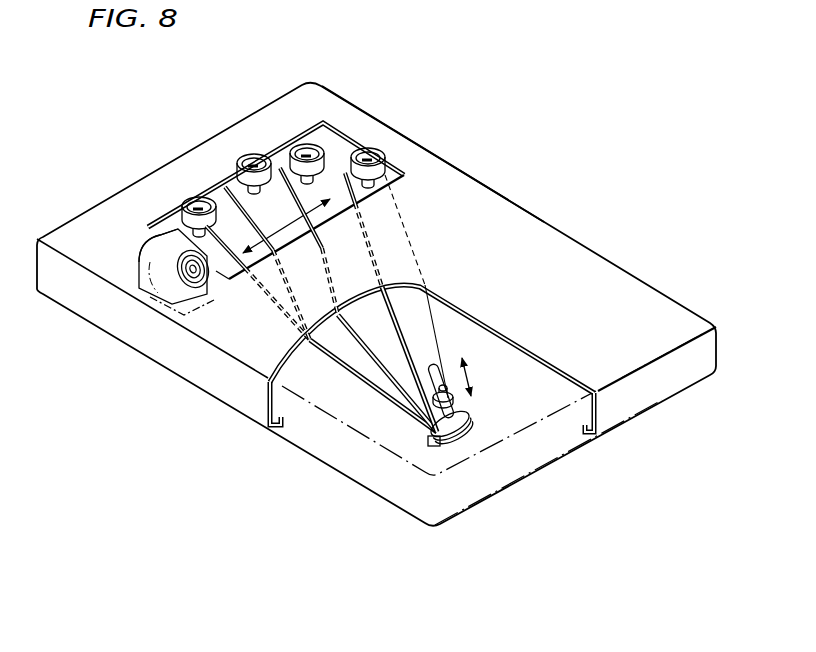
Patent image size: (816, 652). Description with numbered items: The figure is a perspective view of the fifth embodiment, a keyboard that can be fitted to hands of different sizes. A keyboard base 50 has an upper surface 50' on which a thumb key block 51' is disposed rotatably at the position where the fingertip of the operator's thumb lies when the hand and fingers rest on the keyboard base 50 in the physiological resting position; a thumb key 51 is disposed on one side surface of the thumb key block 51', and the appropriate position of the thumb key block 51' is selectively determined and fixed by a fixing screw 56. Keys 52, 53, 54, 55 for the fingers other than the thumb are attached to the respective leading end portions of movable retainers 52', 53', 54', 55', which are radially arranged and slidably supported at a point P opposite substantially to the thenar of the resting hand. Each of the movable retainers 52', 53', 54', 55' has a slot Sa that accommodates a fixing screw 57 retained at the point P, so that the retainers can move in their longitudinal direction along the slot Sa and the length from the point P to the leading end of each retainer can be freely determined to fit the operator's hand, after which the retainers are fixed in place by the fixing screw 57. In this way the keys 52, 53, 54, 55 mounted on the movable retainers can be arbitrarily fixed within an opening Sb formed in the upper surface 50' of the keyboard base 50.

The keyboard base 50 is at (376, 304).
The upper surface 50' is at (455, 159).
The thumb key 51 is at (176, 319).
The thumb key block 51' is at (106, 293).
The key 52 is at (166, 176).
The movable retainer 52' is at (321, 329).
The key 53 is at (244, 134).
The movable retainer 53' is at (267, 273).
The key 54 is at (326, 120).
The movable retainer 54' is at (365, 300).
The key 55 is at (390, 134).
The movable retainer 55' is at (399, 302).
The fixing screw 56 is at (160, 304).
The fixing screw 57 is at (427, 440).
The slot Sa is at (460, 413).
The opening Sb is at (398, 166).
The point P is at (445, 384).